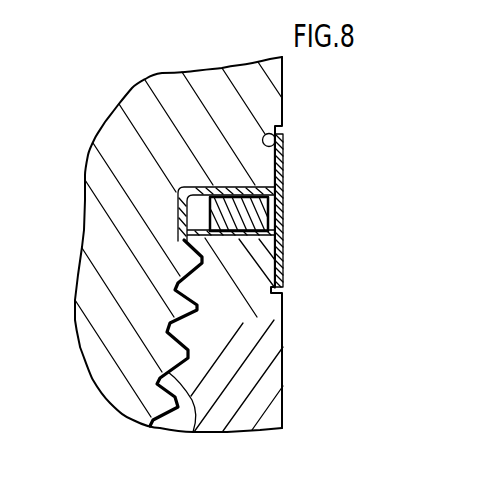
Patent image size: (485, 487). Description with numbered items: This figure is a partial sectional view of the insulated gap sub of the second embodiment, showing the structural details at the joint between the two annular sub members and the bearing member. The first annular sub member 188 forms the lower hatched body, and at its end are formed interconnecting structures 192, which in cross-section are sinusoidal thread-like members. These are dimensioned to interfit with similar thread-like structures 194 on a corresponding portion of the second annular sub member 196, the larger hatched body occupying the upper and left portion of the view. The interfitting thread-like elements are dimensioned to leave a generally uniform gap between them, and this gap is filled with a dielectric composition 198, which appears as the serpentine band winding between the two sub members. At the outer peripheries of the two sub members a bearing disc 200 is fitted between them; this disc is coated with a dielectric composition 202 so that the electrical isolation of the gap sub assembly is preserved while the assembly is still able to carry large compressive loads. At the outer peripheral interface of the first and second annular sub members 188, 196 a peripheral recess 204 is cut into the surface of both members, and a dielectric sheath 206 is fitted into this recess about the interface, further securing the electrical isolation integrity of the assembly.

The first annular sub member 188 is at (280, 387).
The interconnecting structures 192 is at (193, 431).
The thread-like structures 194 is at (197, 311).
The second annular sub member 196 is at (100, 160).
The dielectric composition 198 is at (197, 311).
The bearing disc 200 is at (262, 216).
The dielectric composition 202 is at (276, 254).
The peripheral recess 204 is at (283, 126).
The dielectric sheath 206 is at (280, 172).